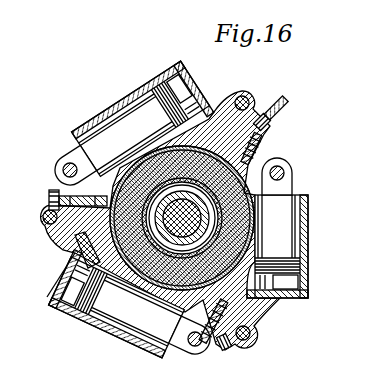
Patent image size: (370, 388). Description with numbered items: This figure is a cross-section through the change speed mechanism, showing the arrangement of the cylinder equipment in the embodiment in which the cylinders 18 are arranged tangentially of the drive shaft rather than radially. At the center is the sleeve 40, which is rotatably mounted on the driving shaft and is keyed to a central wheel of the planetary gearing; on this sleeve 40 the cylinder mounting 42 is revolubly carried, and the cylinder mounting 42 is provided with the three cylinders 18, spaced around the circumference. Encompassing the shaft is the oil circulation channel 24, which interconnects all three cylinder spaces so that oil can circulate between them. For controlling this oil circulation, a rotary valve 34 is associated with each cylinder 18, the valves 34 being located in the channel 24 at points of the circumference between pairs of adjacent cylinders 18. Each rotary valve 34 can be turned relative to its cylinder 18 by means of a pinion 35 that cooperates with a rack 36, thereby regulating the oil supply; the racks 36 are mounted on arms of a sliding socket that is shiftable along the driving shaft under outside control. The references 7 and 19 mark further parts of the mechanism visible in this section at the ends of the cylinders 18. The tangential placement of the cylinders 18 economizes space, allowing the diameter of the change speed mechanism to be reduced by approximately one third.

The housing 7 is at (236, 197).
The cylinder 18 is at (140, 104).
The cylinder lug 19 is at (92, 140).
The oil circulation channel 24 is at (240, 219).
The rotary valve 34 is at (48, 195).
The pinion 35 is at (270, 125).
The rack 36 is at (246, 97).
The sleeve 40 is at (63, 266).
The cylinder mounting 42 is at (74, 236).